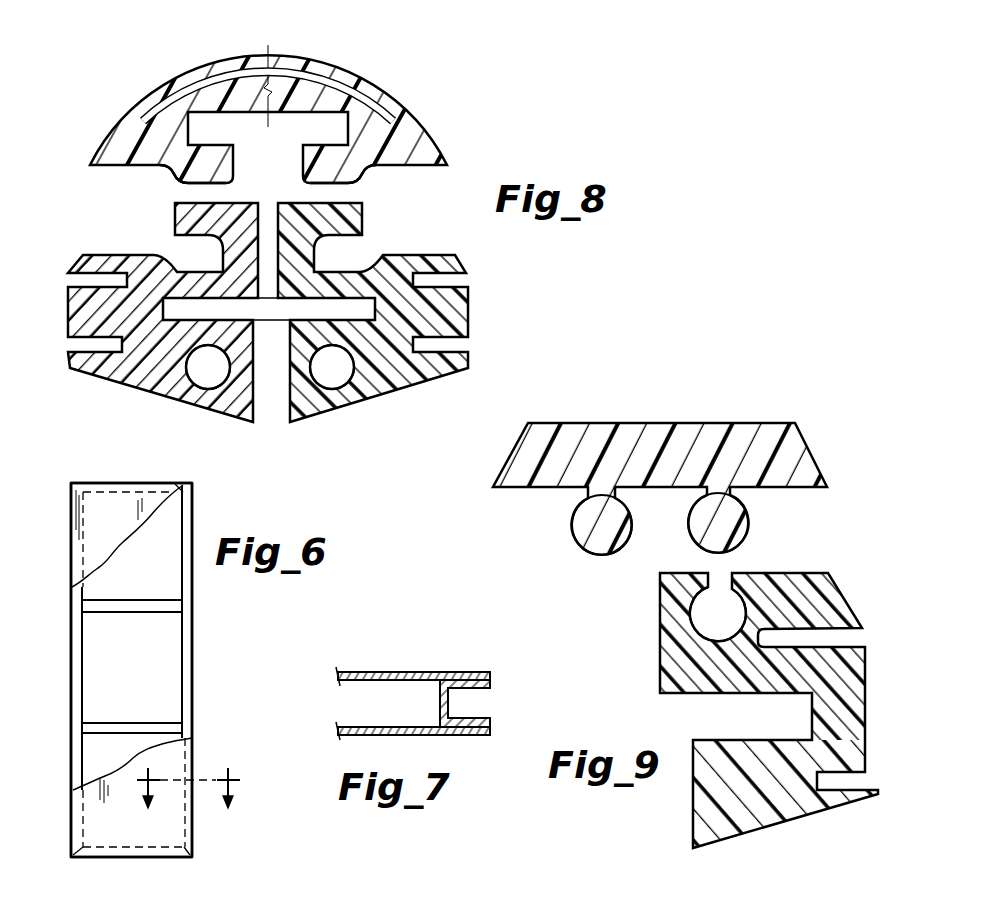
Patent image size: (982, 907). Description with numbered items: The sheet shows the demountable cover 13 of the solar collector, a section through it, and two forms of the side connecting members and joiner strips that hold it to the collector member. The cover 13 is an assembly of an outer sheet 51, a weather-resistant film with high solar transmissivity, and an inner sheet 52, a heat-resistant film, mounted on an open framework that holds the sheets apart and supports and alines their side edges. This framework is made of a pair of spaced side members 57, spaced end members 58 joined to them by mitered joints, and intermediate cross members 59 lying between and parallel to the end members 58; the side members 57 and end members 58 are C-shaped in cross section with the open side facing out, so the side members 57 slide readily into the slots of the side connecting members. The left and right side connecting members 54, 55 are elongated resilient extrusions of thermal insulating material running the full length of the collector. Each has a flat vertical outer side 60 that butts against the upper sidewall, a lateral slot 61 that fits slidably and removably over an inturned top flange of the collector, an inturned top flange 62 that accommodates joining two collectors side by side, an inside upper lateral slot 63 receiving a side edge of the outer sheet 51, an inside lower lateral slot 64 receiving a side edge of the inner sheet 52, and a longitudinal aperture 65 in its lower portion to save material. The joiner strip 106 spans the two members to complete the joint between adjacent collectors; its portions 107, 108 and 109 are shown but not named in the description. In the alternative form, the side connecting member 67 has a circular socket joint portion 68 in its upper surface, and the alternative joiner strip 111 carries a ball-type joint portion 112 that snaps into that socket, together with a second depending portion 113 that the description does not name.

In FIG. 6, the cover 13 is at (197, 688).
In FIG. 7, the cover 13 is at (353, 673).
In FIG. 7, the outer sheet 51 is at (402, 672).
In FIG. 7, the inner sheet 52 is at (430, 735).
In FIG. 8, the side connecting member 54 is at (433, 378).
In FIG. 8, the side connecting member 55 is at (112, 385).
In FIG. 6, the side member 57 is at (71, 660).
In FIG. 7, the side member 57 is at (477, 717).
In FIG. 6, the end member 58 is at (148, 483).
In FIG. 6, the intermediate cross member 59 is at (130, 603).
In FIG. 8, the outer side 60 is at (289, 405).
In FIG. 8, the lateral slot 61 is at (310, 320).
In FIG. 8, the inturned top flange 62 is at (362, 227).
In FIG. 8, the inside upper lateral slot 63 is at (455, 283).
In FIG. 8, the inside lower lateral slot 64 is at (455, 350).
In FIG. 8, the longitudinal aperture 65 is at (332, 380).
In FIG. 9, the side connecting member 67 is at (660, 655).
In FIG. 9, the circular socket joint portion 68 is at (716, 594).
In FIG. 8, the joiner strip 106 is at (425, 127).
In FIG. 8, the left foot 107 is at (175, 178).
In FIG. 8, the right foot 108 is at (347, 170).
In FIG. 8, the reinforcing strip 109 is at (337, 77).
In FIG. 9, the joiner strip 111 is at (797, 432).
In FIG. 9, the ball-type joint portion 112 is at (747, 527).
In FIG. 9, the left ball 113 is at (580, 532).